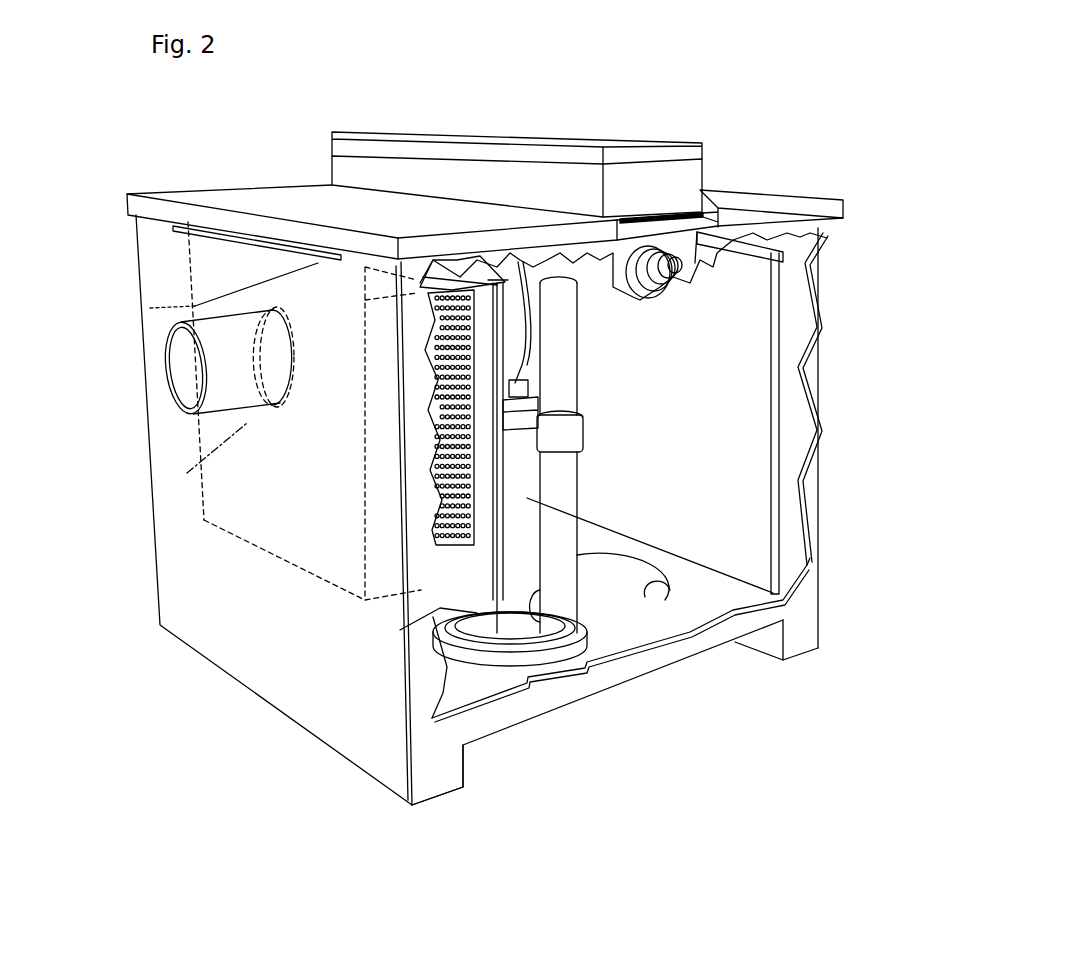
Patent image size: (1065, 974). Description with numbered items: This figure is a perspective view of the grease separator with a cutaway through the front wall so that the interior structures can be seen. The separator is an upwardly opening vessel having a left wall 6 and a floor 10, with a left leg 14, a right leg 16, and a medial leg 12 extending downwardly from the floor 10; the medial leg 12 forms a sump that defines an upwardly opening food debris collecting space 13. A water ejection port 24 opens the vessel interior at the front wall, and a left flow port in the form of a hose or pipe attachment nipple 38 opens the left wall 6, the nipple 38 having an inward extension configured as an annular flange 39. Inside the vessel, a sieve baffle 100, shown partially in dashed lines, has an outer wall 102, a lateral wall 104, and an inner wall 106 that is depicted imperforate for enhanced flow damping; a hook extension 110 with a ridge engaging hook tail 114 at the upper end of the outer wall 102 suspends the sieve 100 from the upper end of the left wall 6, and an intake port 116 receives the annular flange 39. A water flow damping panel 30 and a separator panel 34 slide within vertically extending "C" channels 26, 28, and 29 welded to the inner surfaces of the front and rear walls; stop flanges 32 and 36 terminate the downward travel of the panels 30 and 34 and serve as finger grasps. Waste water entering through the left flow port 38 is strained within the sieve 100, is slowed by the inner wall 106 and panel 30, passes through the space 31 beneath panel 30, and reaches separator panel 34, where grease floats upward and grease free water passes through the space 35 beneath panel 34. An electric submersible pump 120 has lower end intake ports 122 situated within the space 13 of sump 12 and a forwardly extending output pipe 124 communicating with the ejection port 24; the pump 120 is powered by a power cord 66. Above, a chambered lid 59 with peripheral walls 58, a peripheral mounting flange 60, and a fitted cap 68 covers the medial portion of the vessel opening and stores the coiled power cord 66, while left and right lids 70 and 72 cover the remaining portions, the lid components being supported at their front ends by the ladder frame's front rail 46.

The left wall 6 is at (267, 612).
The floor 10 is at (605, 668).
The medial leg 12 is at (737, 590).
The food debris collecting space 13 is at (602, 592).
The left leg 14 is at (433, 780).
The right leg 16 is at (797, 642).
The water ejection port 24 is at (665, 290).
The "C" channel 26 is at (500, 440).
The "C" channel 28 is at (777, 400).
The "C" channel 29 is at (507, 283).
The panel 30 is at (473, 610).
The space 31 is at (490, 648).
The stop flange 32 is at (577, 283).
The separator baffle 34 is at (737, 453).
The space 35 is at (737, 640).
The stop flange 36 is at (777, 300).
The left hose or pipe attachment nipple 38 is at (183, 390).
The annular flange 39 is at (272, 405).
The front rail 46 is at (723, 217).
The peripheral walls 58 is at (352, 168).
The chambered lid 59 is at (550, 114).
The peripheral mounting flange 60 is at (660, 217).
The electrical power cord 66 is at (540, 360).
The fitted cap 68 is at (430, 133).
The left lid 70 is at (234, 198).
The right lid 72 is at (768, 200).
The sieve baffle 100 is at (470, 478).
The outer wall 102 is at (187, 473).
The lateral wall 104 is at (427, 600).
The inner wall 106 is at (420, 288).
The hook extension 110 is at (150, 308).
The ridge engaging hook tail 114 is at (183, 230).
The intake port 116 is at (270, 412).
The submersible pump 120 is at (527, 498).
The water and debris intake ports 122 is at (585, 667).
The output pipe 124 is at (567, 403).